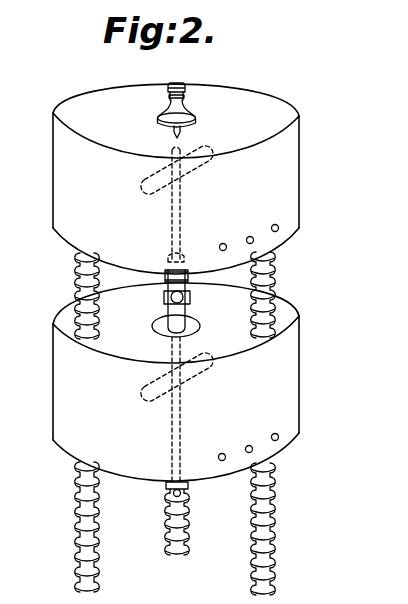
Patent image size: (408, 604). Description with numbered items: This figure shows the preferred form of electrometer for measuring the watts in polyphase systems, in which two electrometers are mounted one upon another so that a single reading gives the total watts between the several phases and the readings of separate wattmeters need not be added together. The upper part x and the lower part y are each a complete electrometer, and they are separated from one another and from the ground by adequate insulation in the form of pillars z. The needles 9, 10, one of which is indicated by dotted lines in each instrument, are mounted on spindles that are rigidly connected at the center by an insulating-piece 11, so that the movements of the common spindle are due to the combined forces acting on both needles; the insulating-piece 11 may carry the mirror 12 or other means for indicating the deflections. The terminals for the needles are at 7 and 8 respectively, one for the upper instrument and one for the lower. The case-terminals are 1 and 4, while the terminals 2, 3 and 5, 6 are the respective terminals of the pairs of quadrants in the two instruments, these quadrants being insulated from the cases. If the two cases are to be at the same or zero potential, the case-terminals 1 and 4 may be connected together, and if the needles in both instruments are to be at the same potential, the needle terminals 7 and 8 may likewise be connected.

The case-terminal 1 is at (249, 230).
The quadrant terminal 2 is at (219, 237).
The quadrant terminal 3 is at (275, 218).
The case-terminal 4 is at (247, 438).
The quadrant terminal 5 is at (217, 446).
The quadrant terminal 6 is at (273, 427).
The needle terminal 7 is at (180, 86).
The needle terminal 8 is at (187, 494).
The needle 9 is at (208, 159).
The needle 10 is at (208, 371).
The insulating-piece 11 is at (173, 282).
The mirror 12 is at (183, 300).
The upper part x is at (58, 203).
The lower part y is at (66, 410).
The pillars z is at (80, 288).